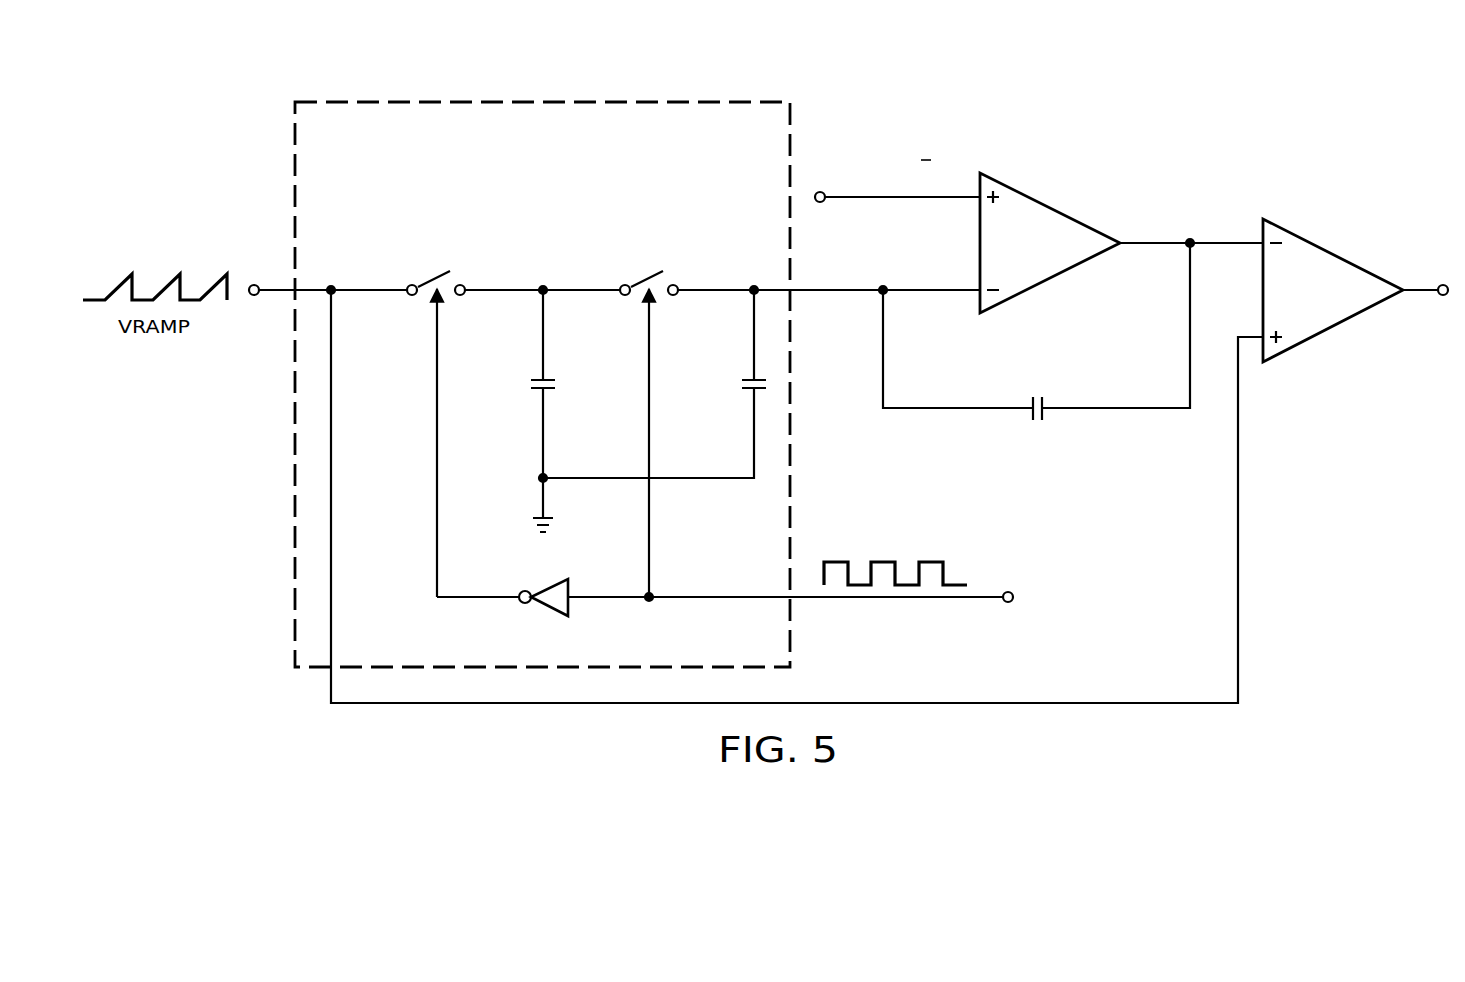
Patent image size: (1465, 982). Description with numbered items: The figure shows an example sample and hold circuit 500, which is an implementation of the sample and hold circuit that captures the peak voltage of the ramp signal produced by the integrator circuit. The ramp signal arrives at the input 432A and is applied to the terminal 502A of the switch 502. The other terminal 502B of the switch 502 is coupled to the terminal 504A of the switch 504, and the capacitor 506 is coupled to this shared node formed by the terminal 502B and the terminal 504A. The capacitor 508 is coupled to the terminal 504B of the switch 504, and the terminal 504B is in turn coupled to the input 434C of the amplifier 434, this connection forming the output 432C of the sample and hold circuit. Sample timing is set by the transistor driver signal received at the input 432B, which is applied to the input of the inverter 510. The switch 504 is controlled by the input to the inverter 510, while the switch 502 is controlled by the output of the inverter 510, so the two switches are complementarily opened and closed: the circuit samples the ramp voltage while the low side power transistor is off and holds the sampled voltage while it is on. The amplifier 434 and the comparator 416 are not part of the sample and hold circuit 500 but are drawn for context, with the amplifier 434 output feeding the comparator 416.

The sample and hold circuit 500 is at (498, 99).
The input 432A is at (272, 290).
The switch 502 is at (428, 279).
The terminal 502A is at (387, 294).
The terminal 502B is at (482, 294).
The switch 504 is at (638, 279).
The terminal 504A is at (600, 294).
The terminal 504B is at (695, 294).
The capacitor 506 is at (530, 383).
The capacitor 508 is at (742, 383).
The inverter 510 is at (545, 607).
The input 432B is at (884, 600).
The output 432C is at (876, 294).
The amplifier 434 is at (1050, 208).
The input 434C is at (966, 294).
The comparator 416 is at (1332, 258).